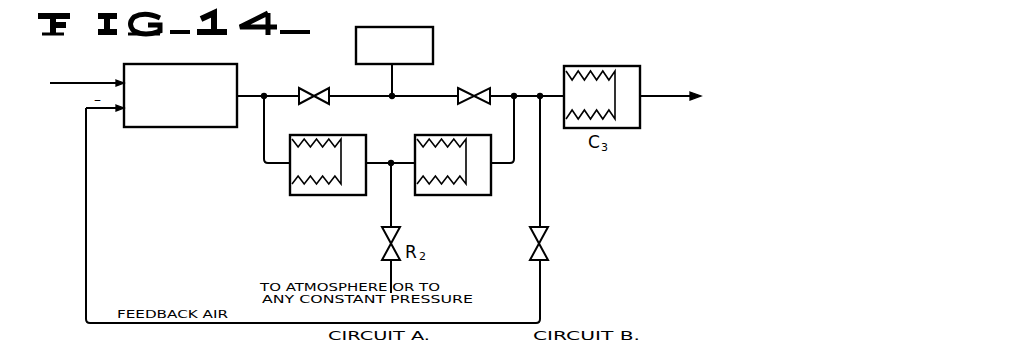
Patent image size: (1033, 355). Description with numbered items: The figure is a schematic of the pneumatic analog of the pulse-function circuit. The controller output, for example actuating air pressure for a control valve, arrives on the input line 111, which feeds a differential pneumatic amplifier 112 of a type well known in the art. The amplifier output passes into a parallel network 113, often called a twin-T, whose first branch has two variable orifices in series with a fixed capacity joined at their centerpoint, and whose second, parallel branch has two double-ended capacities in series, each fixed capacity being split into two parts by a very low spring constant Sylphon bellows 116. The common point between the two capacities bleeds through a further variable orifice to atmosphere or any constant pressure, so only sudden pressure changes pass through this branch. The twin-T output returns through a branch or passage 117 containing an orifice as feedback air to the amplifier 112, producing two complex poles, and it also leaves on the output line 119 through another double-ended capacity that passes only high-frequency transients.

The input line 111 is at (76, 81).
The differential pneumatic amplifier 112 is at (195, 64).
The parallel network (twin-T) 113 is at (454, 61).
The Sylphon bellows 116 is at (336, 145).
The branch or passage 117 is at (543, 203).
The output line 119 is at (667, 94).